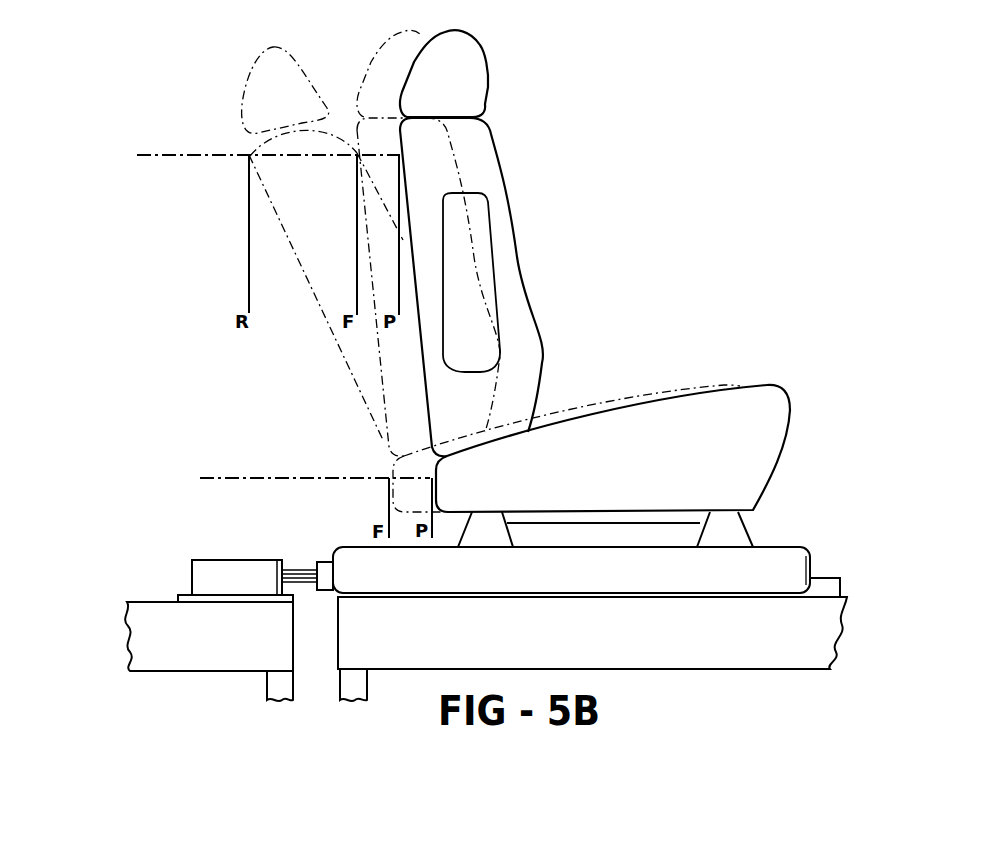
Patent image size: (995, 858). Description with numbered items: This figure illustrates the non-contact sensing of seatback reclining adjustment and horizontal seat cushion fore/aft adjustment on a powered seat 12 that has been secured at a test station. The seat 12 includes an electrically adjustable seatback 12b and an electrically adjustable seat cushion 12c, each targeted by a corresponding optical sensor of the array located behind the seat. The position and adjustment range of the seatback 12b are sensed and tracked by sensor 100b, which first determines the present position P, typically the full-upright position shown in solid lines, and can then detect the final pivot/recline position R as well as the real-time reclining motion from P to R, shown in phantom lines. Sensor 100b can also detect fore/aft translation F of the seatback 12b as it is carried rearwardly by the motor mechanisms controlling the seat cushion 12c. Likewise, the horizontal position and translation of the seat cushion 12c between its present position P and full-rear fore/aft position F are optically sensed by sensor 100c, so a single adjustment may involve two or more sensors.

The seat 12 is at (571, 311).
The seatback 12b is at (447, 172).
The seat cushion 12c is at (664, 467).
The sensor 100b is at (223, 157).
The sensor 100c is at (263, 478).